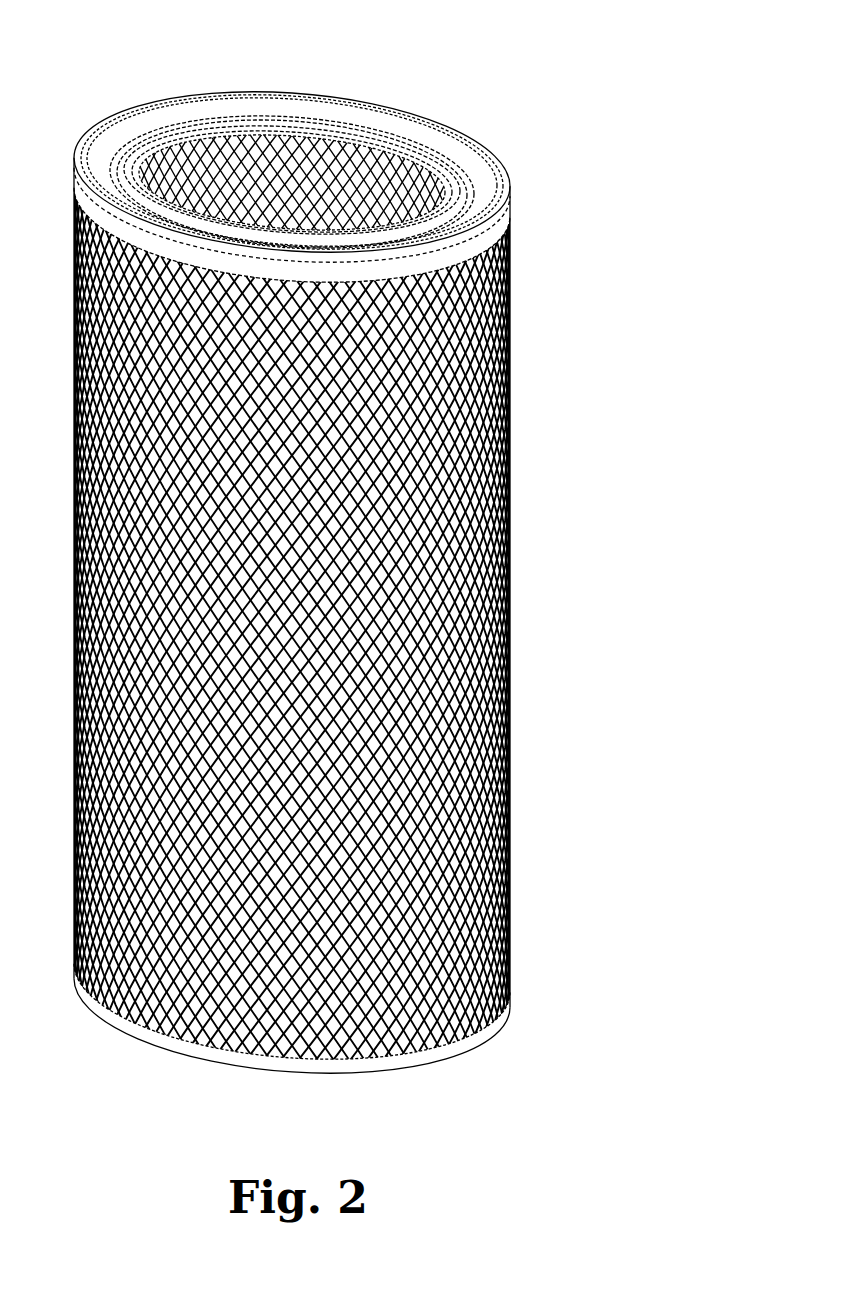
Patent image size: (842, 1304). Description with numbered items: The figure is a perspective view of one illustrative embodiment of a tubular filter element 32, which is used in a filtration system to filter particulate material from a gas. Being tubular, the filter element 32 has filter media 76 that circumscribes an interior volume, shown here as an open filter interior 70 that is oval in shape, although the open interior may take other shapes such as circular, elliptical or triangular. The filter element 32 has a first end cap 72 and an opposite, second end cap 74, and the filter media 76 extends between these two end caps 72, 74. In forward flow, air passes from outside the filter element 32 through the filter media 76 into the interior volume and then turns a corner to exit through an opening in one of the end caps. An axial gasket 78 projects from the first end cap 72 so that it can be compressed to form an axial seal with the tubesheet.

The tubular filter element 32 is at (466, 55).
The open filter interior 70 is at (295, 140).
The first end cap 72 is at (495, 183).
The second end cap 74 is at (365, 1068).
The filter media 76 is at (218, 1002).
The axial gasket 78 is at (370, 112).